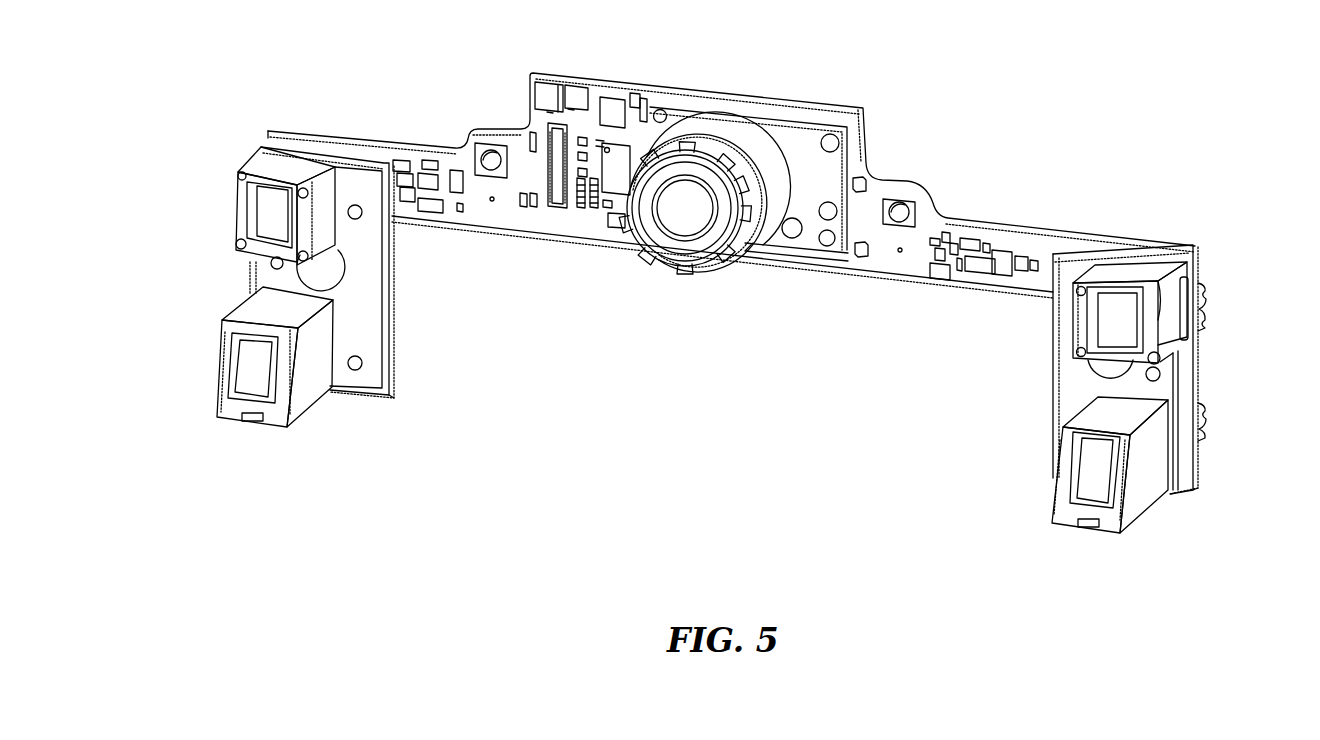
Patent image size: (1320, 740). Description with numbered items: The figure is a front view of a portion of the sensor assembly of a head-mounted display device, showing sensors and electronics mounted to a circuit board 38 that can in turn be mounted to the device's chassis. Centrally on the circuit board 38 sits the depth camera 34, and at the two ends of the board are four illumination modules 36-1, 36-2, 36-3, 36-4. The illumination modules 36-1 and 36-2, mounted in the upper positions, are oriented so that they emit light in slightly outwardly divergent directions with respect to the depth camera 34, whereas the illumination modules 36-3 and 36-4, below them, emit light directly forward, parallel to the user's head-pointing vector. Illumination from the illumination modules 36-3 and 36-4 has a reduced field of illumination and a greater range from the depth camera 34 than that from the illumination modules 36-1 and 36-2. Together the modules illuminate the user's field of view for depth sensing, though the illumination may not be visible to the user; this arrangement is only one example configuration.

The depth camera 34 is at (770, 130).
The circuit board 38 is at (1048, 224).
The illumination module 36-1 is at (1172, 317).
The illumination module 36-2 is at (272, 218).
The illumination module 36-3 is at (250, 363).
The illumination module 36-4 is at (1153, 466).